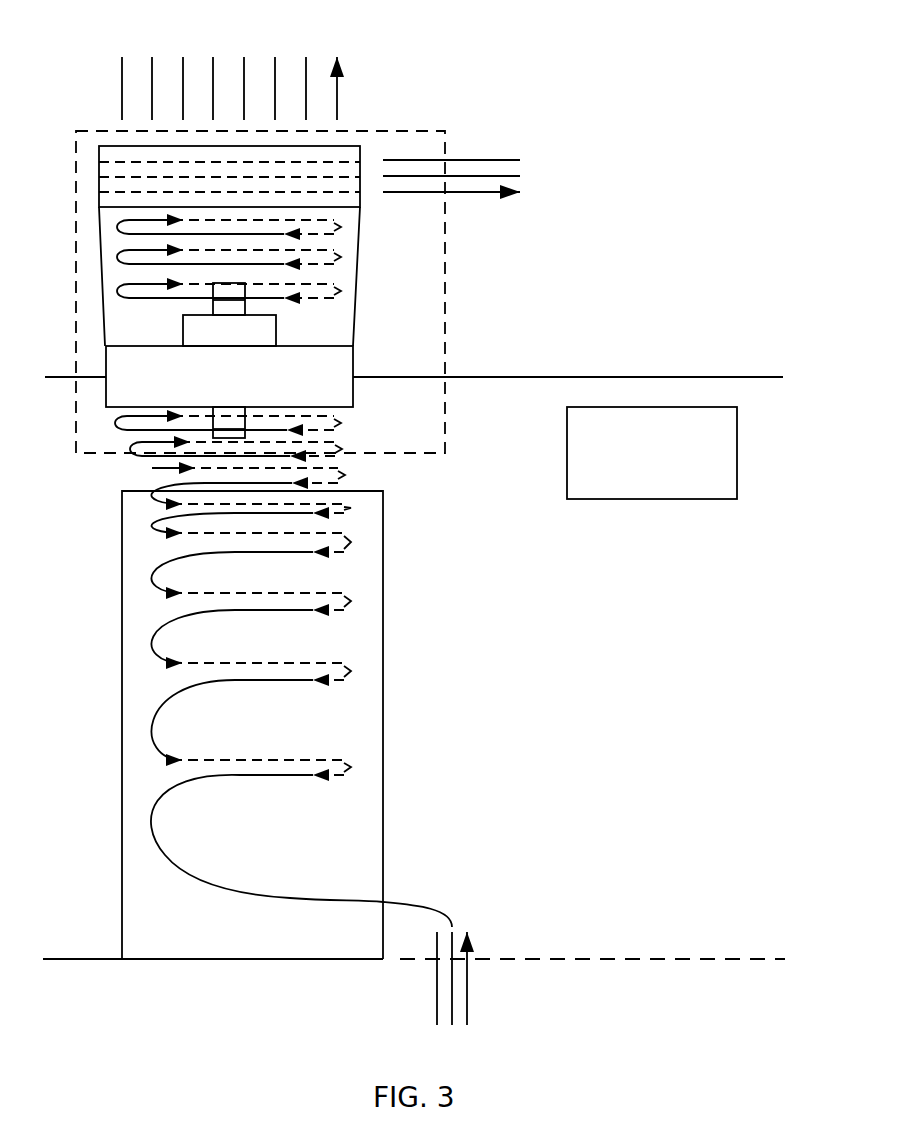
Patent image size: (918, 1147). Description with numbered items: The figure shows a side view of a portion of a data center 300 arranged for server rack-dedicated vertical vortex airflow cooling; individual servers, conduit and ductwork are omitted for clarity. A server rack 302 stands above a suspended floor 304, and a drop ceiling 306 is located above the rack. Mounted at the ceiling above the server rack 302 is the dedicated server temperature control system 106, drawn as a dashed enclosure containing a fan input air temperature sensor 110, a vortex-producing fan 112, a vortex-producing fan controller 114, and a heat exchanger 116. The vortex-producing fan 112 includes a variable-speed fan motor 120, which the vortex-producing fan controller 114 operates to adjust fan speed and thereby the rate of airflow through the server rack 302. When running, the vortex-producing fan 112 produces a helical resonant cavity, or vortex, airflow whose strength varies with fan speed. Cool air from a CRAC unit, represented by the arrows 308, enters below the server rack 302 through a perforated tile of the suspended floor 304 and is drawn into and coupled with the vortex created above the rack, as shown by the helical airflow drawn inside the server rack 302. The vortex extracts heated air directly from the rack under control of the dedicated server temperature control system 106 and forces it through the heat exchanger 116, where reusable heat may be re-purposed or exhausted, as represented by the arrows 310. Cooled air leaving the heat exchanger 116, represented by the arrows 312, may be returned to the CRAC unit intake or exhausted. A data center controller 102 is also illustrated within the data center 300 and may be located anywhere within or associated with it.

The data center 300 is at (67, 56).
The arrows 310 is at (248, 51).
The arrows 312 is at (565, 186).
The dedicated server temperature control system 106 is at (420, 131).
The heat exchanger 116 is at (347, 152).
The vortex-producing fan controller 114 is at (213, 302).
The variable-speed fan motor 120 is at (248, 335).
The vortex-producing fan 112 is at (343, 364).
The fan input air temperature sensor 110 is at (245, 422).
The drop ceiling 306 is at (557, 373).
The data center controller 102 is at (635, 486).
The server rack 302 is at (122, 560).
The suspended floor 304 is at (100, 958).
The arrows 308 is at (525, 1003).